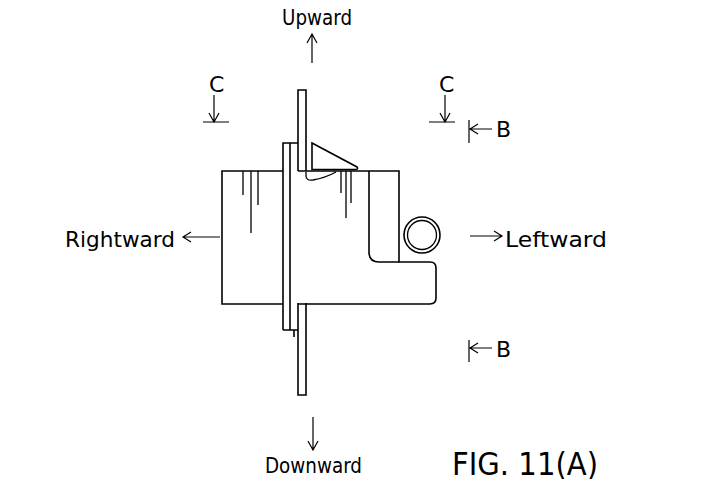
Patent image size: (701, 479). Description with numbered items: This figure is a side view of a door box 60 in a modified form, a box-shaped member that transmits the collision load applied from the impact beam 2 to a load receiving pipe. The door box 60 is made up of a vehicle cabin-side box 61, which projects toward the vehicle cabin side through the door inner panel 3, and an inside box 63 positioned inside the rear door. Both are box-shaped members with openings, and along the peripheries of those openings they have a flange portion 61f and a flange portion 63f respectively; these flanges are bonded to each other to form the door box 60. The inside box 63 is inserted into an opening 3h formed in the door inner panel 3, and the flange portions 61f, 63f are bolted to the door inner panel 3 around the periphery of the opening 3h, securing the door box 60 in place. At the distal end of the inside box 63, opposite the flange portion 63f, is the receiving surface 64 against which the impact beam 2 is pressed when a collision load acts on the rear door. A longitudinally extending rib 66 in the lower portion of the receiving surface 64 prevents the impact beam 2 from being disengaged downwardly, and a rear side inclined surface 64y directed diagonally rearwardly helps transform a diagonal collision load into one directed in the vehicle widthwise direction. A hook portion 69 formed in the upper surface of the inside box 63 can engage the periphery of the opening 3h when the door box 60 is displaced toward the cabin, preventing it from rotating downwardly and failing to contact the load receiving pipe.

The impact beam 2 is at (433, 249).
The door inner panel 3 is at (303, 113).
The opening 3h is at (318, 171).
The door box 60 is at (208, 164).
The vehicle cabin-side box 61 is at (232, 273).
The flange portion 61f is at (288, 320).
The inside box 63 is at (338, 275).
The flange portion 63f is at (295, 335).
The receiving surface 64 is at (413, 185).
The rear side inclined surface 64y is at (385, 215).
The rib 66 is at (414, 292).
The hook portion 69 is at (318, 157).